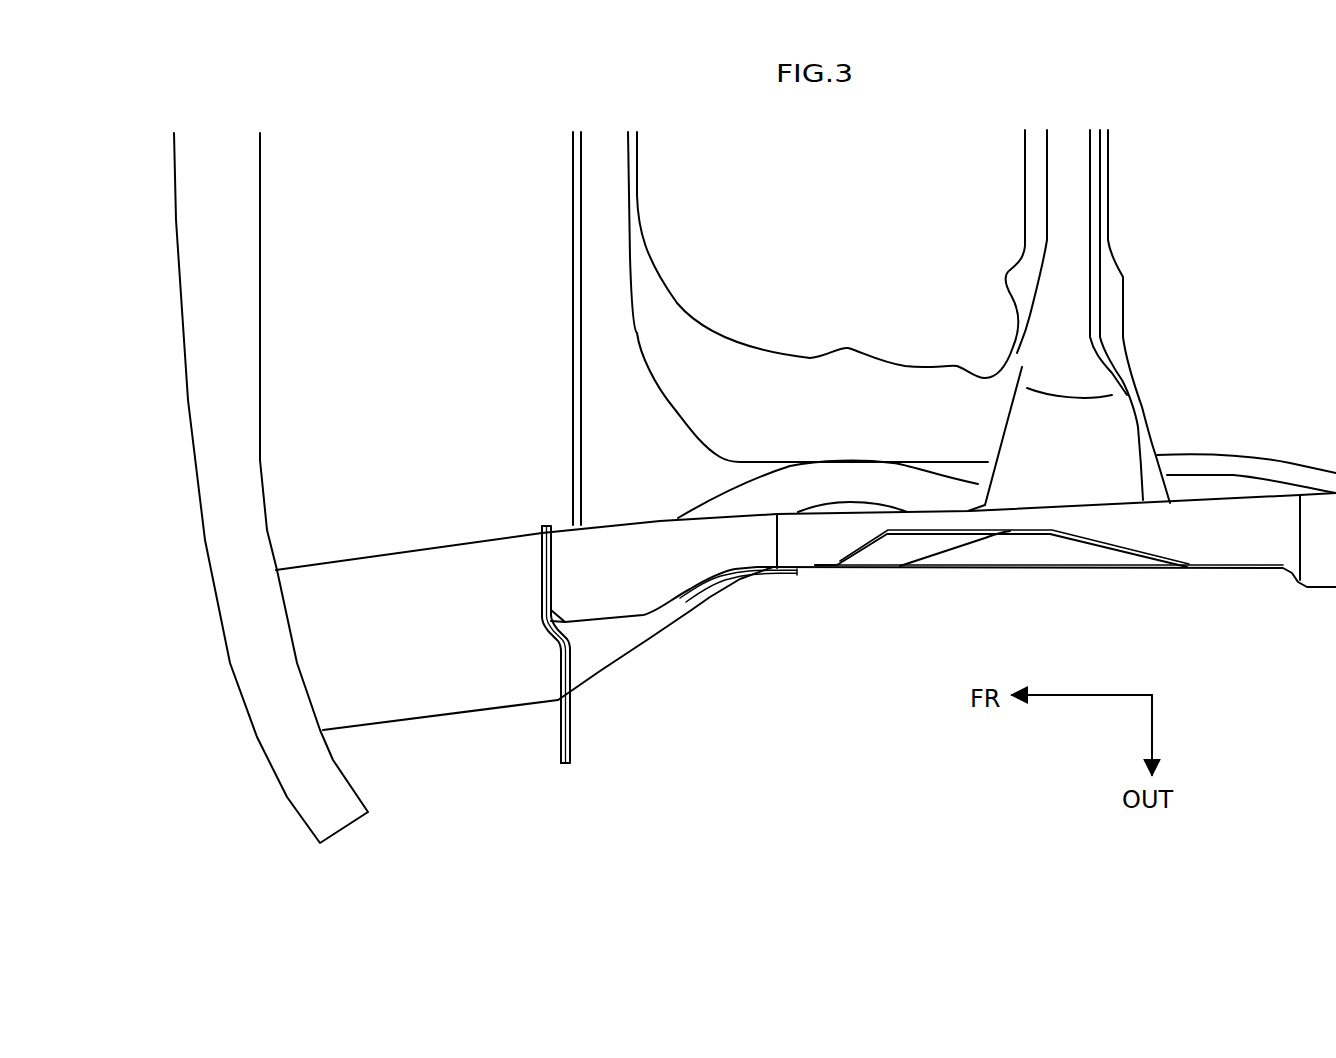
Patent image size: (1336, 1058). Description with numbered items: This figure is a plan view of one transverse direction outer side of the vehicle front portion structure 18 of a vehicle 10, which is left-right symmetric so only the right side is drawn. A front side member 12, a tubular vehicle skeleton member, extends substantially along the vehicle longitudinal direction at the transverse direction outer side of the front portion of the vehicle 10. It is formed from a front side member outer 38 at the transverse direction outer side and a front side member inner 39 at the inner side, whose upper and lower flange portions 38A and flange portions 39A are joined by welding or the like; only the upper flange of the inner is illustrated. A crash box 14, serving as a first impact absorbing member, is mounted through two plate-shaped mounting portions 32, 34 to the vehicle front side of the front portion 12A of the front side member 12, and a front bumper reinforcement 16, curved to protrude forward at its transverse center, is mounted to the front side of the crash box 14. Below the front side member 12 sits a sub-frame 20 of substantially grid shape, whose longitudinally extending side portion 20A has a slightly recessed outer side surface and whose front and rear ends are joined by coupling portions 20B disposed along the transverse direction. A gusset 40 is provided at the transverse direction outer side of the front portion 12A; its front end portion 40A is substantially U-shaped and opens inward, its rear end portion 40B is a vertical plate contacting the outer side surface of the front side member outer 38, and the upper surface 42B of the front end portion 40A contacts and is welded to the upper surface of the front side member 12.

The vehicle 10 is at (402, 178).
The front side member 12 is at (967, 574).
The front portion 12A is at (622, 550).
The crash box 14 is at (397, 565).
The front bumper reinforcement 16 is at (250, 338).
The vehicle front portion structure 18 is at (657, 687).
The sub-frame 20 is at (901, 355).
The side portion 20A is at (863, 482).
The coupling portion 20B is at (595, 178).
The mounting portion 32 is at (570, 740).
The mounting portion 34 is at (558, 742).
The front side member outer 38 is at (1049, 581).
The flange portion 38A is at (1083, 549).
The front side member inner 39 is at (1017, 503).
The flange portion 39A is at (1110, 543).
The gusset 40 is at (685, 653).
The front end portion 40A is at (590, 683).
The rear end portion 40B is at (787, 573).
The upper surface 42B is at (612, 652).